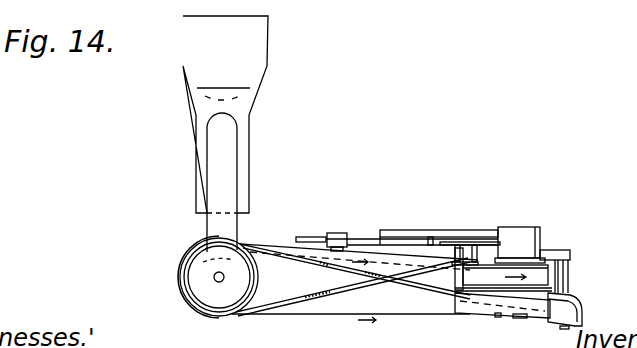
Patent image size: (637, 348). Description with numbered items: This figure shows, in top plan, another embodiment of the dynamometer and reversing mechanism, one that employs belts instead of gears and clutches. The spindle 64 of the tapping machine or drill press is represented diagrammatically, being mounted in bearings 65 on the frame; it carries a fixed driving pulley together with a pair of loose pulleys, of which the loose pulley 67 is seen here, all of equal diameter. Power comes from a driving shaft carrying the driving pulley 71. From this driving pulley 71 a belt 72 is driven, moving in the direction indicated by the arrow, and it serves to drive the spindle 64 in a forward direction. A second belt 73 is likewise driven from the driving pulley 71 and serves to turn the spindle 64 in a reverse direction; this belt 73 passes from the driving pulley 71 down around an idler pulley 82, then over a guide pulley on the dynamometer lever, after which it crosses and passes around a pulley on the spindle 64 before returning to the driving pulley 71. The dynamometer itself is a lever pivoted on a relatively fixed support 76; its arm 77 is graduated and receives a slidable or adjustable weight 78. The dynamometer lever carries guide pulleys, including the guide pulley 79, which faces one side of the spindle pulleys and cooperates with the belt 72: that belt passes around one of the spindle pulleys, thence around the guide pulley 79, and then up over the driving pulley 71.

The spindle 64 is at (214, 278).
The bearings 65 is at (228, 260).
The loose pulley 67 is at (251, 294).
The driving pulley 71 is at (540, 277).
The belt 72 is at (322, 255).
The second belt 73 is at (357, 307).
The relatively fixed support 76 is at (447, 228).
The arm 77 is at (305, 240).
The slidable weight 78 is at (346, 236).
The guide pulley 79 is at (471, 272).
The idler pulley 82 is at (549, 322).